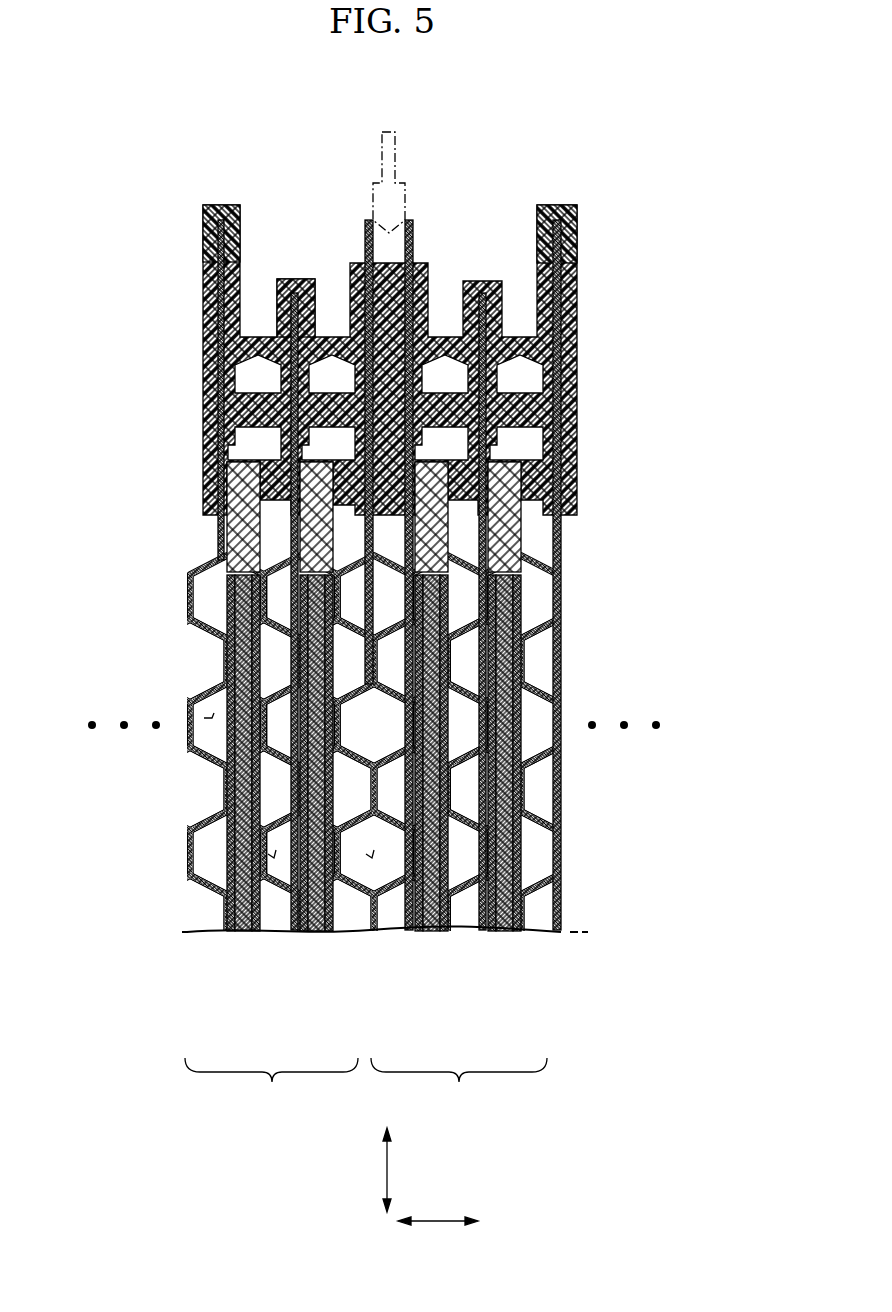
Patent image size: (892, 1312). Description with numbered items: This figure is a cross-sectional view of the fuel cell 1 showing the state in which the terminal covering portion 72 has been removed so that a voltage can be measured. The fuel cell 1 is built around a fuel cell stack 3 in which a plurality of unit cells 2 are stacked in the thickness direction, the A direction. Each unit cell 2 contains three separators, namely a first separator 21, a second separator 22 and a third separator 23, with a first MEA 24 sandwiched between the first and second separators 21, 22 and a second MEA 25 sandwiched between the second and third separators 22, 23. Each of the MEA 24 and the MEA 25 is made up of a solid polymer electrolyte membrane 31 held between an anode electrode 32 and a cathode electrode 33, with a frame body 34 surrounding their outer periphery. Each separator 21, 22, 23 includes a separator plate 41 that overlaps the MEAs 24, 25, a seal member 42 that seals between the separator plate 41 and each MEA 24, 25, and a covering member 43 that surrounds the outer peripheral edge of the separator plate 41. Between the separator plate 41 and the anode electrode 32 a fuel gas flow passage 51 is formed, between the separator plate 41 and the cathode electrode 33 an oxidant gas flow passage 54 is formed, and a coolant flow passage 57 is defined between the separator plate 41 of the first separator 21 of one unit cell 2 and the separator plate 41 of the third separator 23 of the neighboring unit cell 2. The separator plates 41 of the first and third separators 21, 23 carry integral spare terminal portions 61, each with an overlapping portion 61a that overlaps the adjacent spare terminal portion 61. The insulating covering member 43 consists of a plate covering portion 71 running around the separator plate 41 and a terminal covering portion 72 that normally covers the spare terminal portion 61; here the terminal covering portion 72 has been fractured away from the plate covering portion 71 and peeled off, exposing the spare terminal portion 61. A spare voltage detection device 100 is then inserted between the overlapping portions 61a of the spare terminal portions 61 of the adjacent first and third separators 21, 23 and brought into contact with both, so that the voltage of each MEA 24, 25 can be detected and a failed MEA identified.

The fuel cell 1 is at (590, 133).
The unit cell 2 is at (366, 1087).
The fuel cell stack 3 is at (307, 510).
The first separator 21 is at (220, 945).
The second separator 22 is at (262, 945).
The third separator 23 is at (368, 945).
The first MEA 24 is at (243, 945).
The second MEA 25 is at (317, 945).
The solid polymer electrolyte membrane 31 is at (233, 688).
The anode electrode 32 is at (243, 656).
The cathode electrode 33 is at (254, 592).
The frame body 34 is at (232, 526).
The separator plate 41 is at (337, 723).
The seal member 42 is at (262, 345).
The covering member 43 is at (381, 185).
The fuel gas flow passage 51 is at (205, 717).
The oxidant gas flow passage 54 is at (268, 856).
The coolant flow passage 57 is at (366, 856).
The spare terminal portion 61 is at (299, 575).
The overlapping portion 61a is at (216, 238).
The plate covering portion 71 is at (296, 308).
The terminal covering portion 72 is at (220, 203).
The spare voltage detection device 100 is at (405, 193).